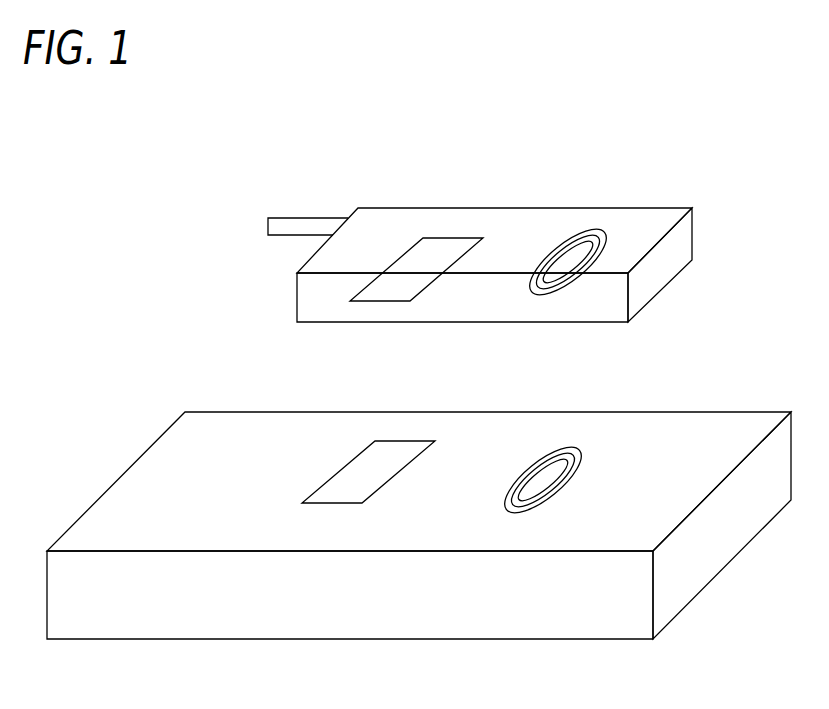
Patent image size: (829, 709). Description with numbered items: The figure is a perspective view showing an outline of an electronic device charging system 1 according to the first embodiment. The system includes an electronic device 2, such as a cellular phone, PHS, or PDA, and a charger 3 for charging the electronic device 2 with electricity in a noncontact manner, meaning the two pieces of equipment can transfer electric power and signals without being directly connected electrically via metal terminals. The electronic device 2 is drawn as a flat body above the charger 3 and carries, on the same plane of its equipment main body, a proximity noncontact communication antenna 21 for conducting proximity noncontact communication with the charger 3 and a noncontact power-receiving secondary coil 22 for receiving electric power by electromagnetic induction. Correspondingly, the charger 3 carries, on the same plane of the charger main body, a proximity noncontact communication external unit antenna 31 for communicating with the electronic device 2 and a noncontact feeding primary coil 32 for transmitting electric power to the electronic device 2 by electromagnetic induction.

The electronic device charging system 1 is at (726, 285).
The electronic device 2 is at (657, 208).
The proximity noncontact communication antenna 21 is at (452, 240).
The noncontact power-receiving secondary coil 22 is at (587, 233).
The charger 3 is at (742, 413).
The proximity noncontact communication external unit antenna 31 is at (410, 443).
The noncontact feeding primary coil 32 is at (563, 448).